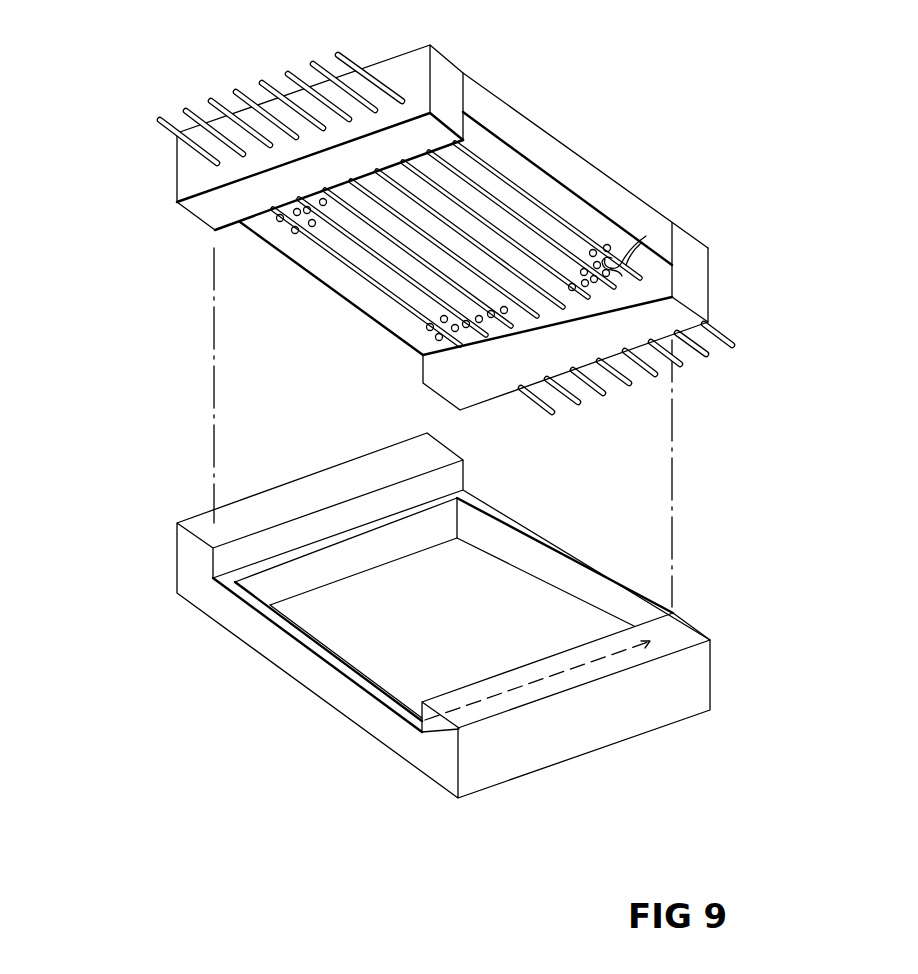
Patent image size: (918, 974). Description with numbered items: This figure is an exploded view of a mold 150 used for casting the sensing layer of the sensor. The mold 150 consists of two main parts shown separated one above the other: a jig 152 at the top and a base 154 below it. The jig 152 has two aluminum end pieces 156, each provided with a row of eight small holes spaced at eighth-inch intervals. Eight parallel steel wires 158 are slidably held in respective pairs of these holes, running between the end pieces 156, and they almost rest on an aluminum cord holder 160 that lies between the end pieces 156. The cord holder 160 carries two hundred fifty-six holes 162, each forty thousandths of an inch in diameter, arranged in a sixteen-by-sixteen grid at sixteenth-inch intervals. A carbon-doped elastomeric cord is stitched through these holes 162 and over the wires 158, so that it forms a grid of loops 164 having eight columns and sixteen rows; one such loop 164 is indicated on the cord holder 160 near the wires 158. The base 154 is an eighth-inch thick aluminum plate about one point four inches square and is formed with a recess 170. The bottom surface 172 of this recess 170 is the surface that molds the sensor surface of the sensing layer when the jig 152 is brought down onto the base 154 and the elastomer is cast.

The mold 150 is at (126, 457).
The jig 152 is at (744, 221).
The base 154 is at (491, 615).
The end pieces 156 is at (437, 63).
The steel wires 158 is at (495, 170).
The cord holder 160 is at (583, 170).
The holes 162 is at (607, 245).
The loops 164 is at (646, 236).
The recess 170 is at (565, 568).
The bottom surface 172 is at (499, 648).